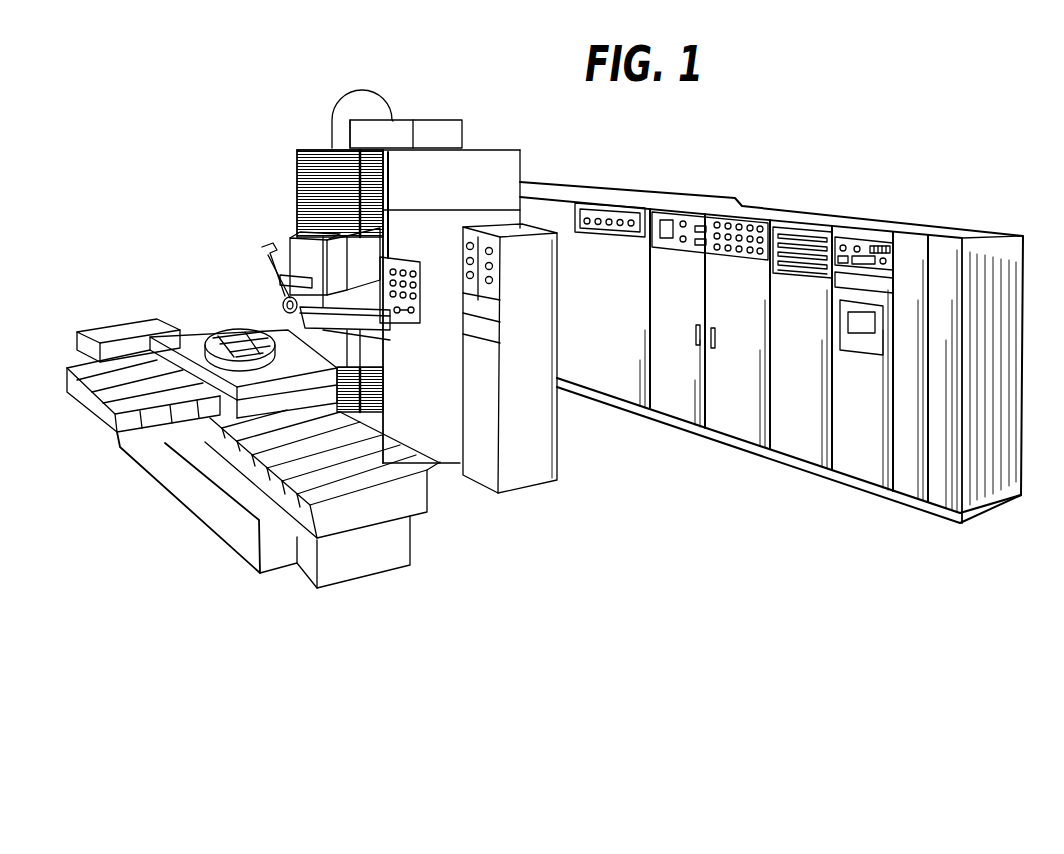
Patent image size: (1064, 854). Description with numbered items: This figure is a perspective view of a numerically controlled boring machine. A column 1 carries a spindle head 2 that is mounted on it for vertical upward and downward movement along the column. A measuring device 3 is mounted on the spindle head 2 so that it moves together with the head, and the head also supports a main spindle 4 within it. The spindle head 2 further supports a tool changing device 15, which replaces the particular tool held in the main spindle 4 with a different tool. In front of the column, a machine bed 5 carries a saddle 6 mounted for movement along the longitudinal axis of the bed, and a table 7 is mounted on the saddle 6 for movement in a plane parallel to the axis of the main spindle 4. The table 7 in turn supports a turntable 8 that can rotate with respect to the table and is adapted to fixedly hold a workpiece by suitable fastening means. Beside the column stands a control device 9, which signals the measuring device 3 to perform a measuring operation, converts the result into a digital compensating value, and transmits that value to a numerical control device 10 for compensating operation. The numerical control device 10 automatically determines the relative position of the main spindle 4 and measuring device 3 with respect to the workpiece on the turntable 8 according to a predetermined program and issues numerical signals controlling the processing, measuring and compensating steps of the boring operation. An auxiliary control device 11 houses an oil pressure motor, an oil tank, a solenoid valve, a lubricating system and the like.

The column 1 is at (452, 228).
The spindle head 2 is at (290, 340).
The measuring device 3 is at (337, 283).
The main spindle 4 is at (283, 301).
The machine bed 5 is at (232, 514).
The saddle 6 is at (230, 455).
The table 7 is at (205, 450).
The turntable 8 is at (217, 327).
The control device 9 is at (557, 453).
The numerical control device 10 is at (998, 226).
The auxiliary control device 11 is at (617, 197).
The tool changing device 15 is at (273, 248).